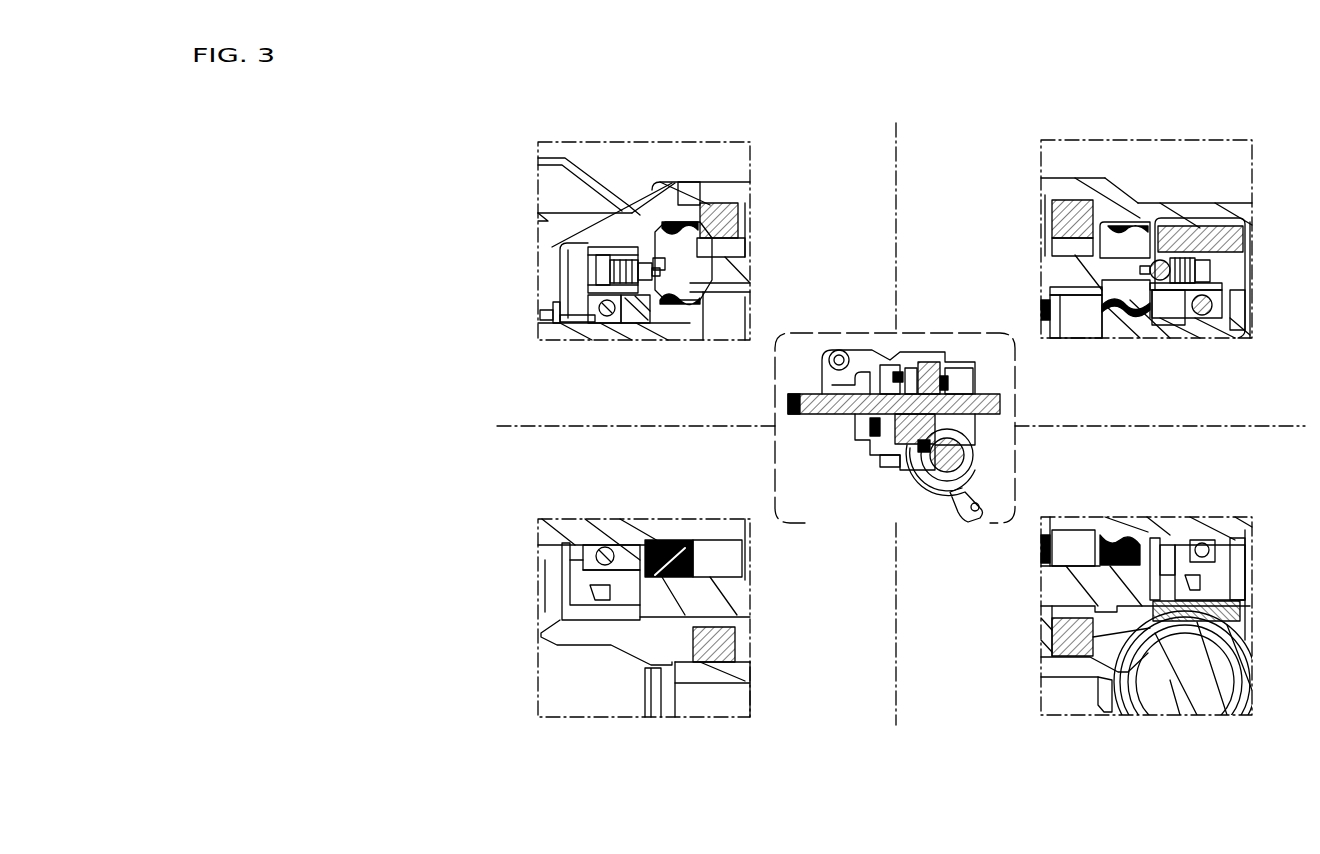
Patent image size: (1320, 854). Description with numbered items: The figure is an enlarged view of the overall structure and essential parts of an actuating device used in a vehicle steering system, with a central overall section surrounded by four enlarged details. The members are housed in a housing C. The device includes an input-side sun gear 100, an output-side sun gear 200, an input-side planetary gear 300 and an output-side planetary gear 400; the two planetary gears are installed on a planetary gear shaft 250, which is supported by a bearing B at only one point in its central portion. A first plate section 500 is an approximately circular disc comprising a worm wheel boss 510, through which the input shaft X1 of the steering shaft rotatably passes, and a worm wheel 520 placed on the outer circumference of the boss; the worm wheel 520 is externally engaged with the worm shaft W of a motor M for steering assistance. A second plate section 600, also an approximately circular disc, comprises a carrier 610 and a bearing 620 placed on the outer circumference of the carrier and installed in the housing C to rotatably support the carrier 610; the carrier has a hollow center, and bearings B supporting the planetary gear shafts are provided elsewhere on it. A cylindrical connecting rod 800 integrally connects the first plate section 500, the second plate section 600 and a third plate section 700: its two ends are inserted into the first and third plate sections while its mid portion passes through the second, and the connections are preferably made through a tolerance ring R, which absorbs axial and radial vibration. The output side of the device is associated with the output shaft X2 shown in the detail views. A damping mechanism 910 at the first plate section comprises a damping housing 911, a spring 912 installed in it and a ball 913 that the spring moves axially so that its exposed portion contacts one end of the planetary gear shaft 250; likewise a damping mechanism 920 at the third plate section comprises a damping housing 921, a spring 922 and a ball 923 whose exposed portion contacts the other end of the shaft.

The input-side sun gear 100 is at (1110, 310).
The output-side sun gear 200 is at (680, 312).
The planetary gear shaft 250 is at (735, 262).
The input-side planetary gear 300 is at (1110, 292).
The output-side planetary gear 400 is at (705, 295).
The first plate section 500 is at (1145, 660).
The worm wheel boss 510 is at (1220, 252).
The worm wheel 520 is at (1240, 236).
The second plate section 600 is at (718, 200).
The carrier 610 is at (740, 565).
The bearing 620 is at (738, 640).
The third plate section 700 is at (578, 283).
The connecting rod 800 is at (660, 640).
The damping mechanism 910 is at (1228, 220).
The damping housing 911 is at (1200, 260).
The spring 912 is at (1182, 258).
The ball 913 is at (1152, 262).
The damping mechanism 920 is at (600, 272).
The damping housing 921 is at (600, 258).
The spring 922 is at (624, 260).
The ball 923 is at (648, 266).
The bearing B is at (740, 243).
The housing C is at (875, 440).
The motor M is at (945, 498).
The tolerance ring R is at (600, 625).
The worm shaft W is at (978, 452).
The input shaft X1 is at (1005, 394).
The output shaft X2 is at (828, 414).